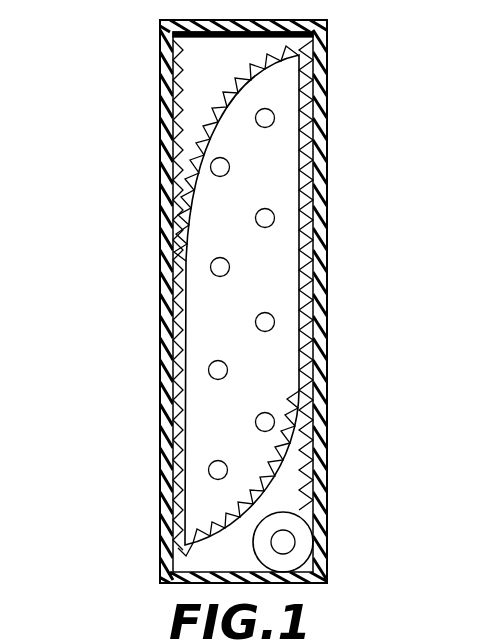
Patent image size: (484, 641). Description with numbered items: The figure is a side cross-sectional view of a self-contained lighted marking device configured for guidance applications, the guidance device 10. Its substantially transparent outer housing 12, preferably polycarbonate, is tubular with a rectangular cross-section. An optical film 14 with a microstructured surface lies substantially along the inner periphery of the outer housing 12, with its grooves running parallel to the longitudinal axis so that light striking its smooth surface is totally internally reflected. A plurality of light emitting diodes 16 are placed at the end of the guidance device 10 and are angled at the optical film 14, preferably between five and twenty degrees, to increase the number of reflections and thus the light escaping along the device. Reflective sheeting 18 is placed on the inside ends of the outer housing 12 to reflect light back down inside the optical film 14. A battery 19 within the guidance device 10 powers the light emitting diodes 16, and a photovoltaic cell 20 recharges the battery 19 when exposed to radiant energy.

The guidance device 10 is at (116, 31).
The outer housing 12 is at (327, 44).
The optical film 14 is at (165, 240).
The light emitting diodes 16 is at (229, 170).
The reflective sheeting 18 is at (255, 370).
The battery 19 is at (286, 547).
The photovoltaic cell 20 is at (192, 38).